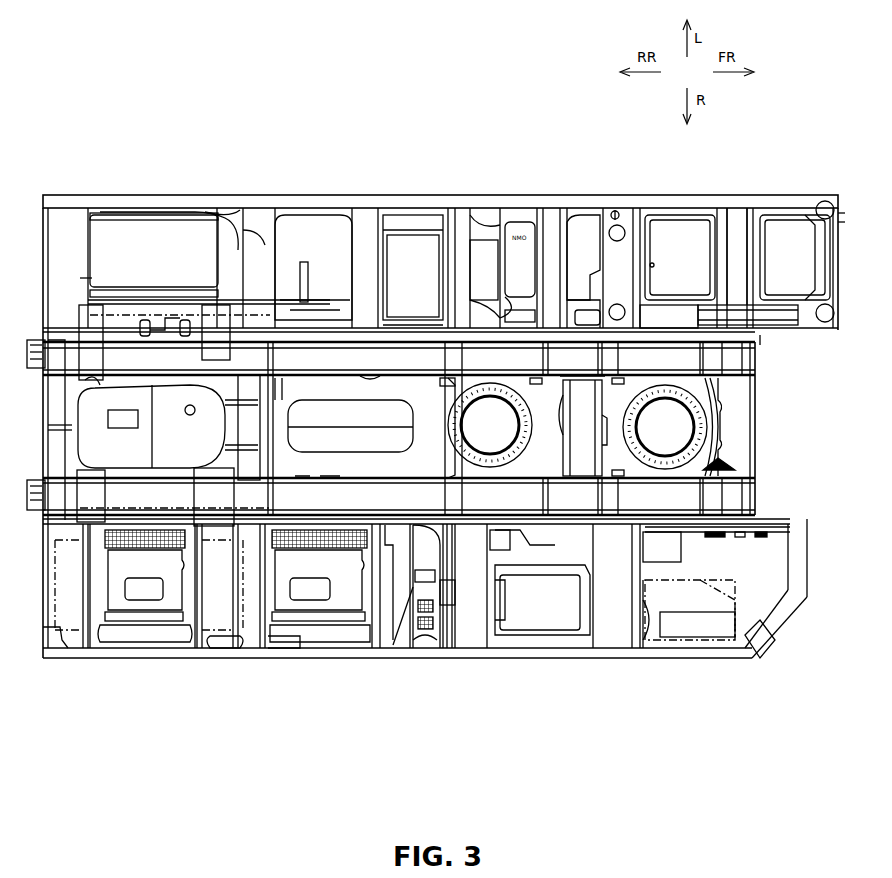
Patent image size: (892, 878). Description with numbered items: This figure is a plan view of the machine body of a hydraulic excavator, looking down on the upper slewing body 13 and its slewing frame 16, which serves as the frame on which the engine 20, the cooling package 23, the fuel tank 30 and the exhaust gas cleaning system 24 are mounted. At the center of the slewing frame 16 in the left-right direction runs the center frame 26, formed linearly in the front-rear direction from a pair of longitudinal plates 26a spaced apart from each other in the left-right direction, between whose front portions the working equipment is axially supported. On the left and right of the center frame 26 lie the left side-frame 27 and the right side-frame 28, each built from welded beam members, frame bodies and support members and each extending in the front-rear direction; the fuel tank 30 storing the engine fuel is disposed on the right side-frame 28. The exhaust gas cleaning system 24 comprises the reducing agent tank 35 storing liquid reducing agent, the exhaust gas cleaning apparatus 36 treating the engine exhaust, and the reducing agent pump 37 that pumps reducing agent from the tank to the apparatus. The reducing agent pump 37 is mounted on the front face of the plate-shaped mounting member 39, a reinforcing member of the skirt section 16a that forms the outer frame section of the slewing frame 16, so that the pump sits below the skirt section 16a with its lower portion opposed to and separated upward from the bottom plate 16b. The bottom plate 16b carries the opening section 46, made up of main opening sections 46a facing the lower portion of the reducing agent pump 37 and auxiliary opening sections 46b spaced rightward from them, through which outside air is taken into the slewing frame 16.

The upper slewing body 13 is at (660, 670).
The slewing frame 16 is at (413, 185).
The skirt section 16a is at (347, 208).
The bottom plate 16b is at (590, 630).
The engine 20 is at (223, 388).
The cooling package 23 is at (222, 640).
The exhaust gas cleaning system 24 is at (738, 575).
The center frame 26 is at (722, 462).
The longitudinal plate 26a is at (565, 340).
The left side-frame 27 is at (160, 198).
The right side-frame 28 is at (152, 652).
The fuel tank 30 is at (648, 635).
The reducing agent tank 35 is at (752, 642).
The exhaust gas cleaning apparatus 36 is at (238, 212).
The reducing agent pump 37 is at (432, 590).
The mounting member 39 is at (413, 535).
The opening section 46 is at (407, 659).
The main opening section 46a is at (413, 587).
The auxiliary opening section 46b is at (425, 632).